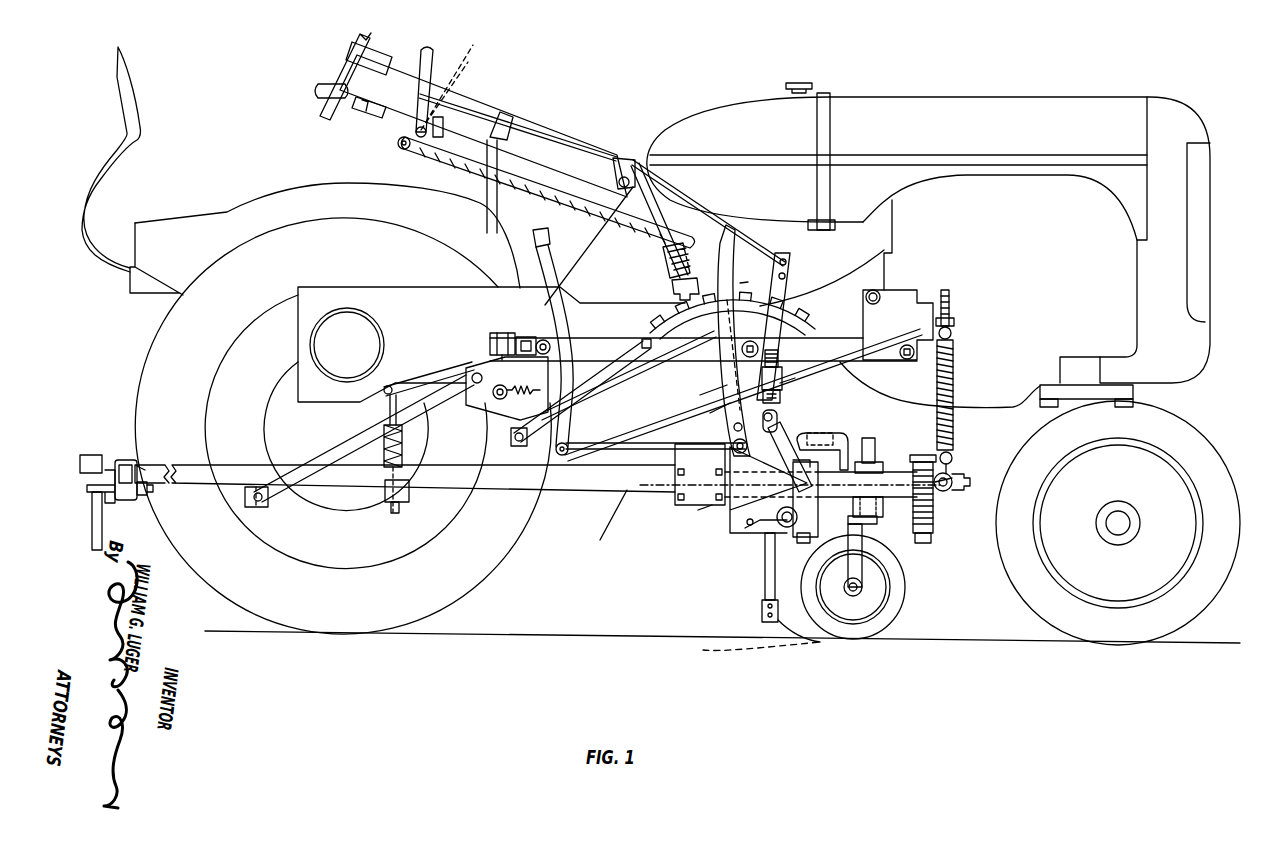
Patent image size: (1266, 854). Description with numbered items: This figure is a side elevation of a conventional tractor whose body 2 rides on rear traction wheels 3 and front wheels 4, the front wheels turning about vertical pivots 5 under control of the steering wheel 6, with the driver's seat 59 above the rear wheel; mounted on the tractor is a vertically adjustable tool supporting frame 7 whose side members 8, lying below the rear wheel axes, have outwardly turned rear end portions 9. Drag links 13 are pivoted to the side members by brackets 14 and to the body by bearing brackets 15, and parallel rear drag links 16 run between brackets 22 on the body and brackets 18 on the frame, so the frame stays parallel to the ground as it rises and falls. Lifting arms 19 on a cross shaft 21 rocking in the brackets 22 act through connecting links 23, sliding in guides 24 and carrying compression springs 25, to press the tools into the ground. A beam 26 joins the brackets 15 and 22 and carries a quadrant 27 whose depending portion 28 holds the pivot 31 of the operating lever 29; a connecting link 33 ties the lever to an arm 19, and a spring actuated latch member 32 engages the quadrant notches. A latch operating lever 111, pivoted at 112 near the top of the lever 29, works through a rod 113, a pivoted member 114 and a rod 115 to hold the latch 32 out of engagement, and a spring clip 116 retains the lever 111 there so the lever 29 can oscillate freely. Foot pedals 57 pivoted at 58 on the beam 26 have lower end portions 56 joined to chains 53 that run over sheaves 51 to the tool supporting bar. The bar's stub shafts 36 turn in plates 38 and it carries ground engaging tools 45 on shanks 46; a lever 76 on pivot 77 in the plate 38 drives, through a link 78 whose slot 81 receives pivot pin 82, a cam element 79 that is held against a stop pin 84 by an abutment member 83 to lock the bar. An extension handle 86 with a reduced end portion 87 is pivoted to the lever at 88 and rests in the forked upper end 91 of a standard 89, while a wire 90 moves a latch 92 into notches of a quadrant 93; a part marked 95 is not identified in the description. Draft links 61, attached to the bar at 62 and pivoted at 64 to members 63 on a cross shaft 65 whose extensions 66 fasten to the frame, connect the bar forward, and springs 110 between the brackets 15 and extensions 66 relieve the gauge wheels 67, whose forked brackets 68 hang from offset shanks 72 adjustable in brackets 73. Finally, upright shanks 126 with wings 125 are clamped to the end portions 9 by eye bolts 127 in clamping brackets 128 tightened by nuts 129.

The body 2 is at (1107, 268).
The rear traction wheels 3 is at (455, 600).
The front wheels 4 is at (1200, 596).
The vertical pivots 5 is at (1125, 383).
The steering wheel 6 is at (355, 43).
The tool supporting frame 7 is at (583, 508).
The side members 8 is at (608, 527).
The rear end portions 9 is at (133, 460).
The drag links 13 is at (847, 368).
The brackets 14 is at (682, 446).
The bearing brackets 15 is at (890, 300).
The rear drag links 16 is at (340, 445).
The brackets 18 is at (262, 503).
The lifting arms 19 is at (422, 372).
The cross shaft 21 is at (494, 396).
The brackets 22 is at (482, 358).
The connecting links 23 is at (386, 410).
The guides 24 is at (412, 497).
The compression springs 25 is at (385, 462).
The beam 26 is at (600, 340).
The quadrant 27 is at (675, 313).
The depending portion 28 is at (700, 395).
The operating lever 29 is at (560, 163).
The pivot 31 is at (710, 415).
The spring actuated latch member 32 is at (700, 276).
The connecting link 33 is at (600, 390).
The stub shafts 36 is at (768, 560).
The plates 38 is at (712, 505).
The ground engaging tools 45 is at (762, 630).
The shanks 46 is at (762, 600).
The sheaves 51 is at (826, 437).
The chains or flexible elements 53 is at (625, 444).
The lower end portions 56 is at (567, 437).
The foot pedals 57 is at (550, 258).
The pivots 58 is at (543, 340).
The driver's seat 59 is at (178, 222).
The draft links 61 is at (895, 470).
The connection 62 is at (805, 540).
The members 63 is at (960, 478).
The pivots 64 is at (924, 540).
The stationary cross shaft 65 is at (935, 485).
The extensions 66 is at (873, 503).
The gauge wheels or castors 67 is at (888, 625).
The forked bracket 68 is at (860, 581).
The offset shanks 72 is at (870, 460).
The brackets 73 is at (882, 470).
The lever 76 is at (784, 314).
The pivot 77 is at (752, 456).
The link 78 is at (790, 430).
The cam element 79 is at (780, 522).
The elongated opening or slot 81 is at (785, 418).
The pivot pin 82 is at (781, 402).
The cam element or abutment member 83 is at (740, 488).
The stop pin 84 is at (765, 520).
The operating member or extension handle 86 is at (410, 153).
The reduced end portion 87 is at (742, 262).
The pivotal connection 88 is at (790, 268).
The standard 89 is at (733, 365).
The rod or wire 90 is at (768, 360).
The forked upper end 91 is at (733, 252).
The spring actuated latch member 92 is at (780, 383).
The quadrant 93 is at (836, 443).
The center line 95 is at (758, 281).
The springs 110 is at (955, 422).
The latch operating lever 111 is at (433, 62).
The pivot 112 is at (414, 132).
The rod or wire 113 is at (497, 112).
The member 114 is at (632, 158).
The rod or wire 115 is at (670, 186).
The spring clip or retaining member 116 is at (443, 95).
The laterally extending wing 125 is at (87, 455).
The upright shank 126 is at (86, 545).
The eye bolts 127 is at (122, 500).
The clamping brackets 128 is at (124, 460).
The nuts 129 is at (150, 494).